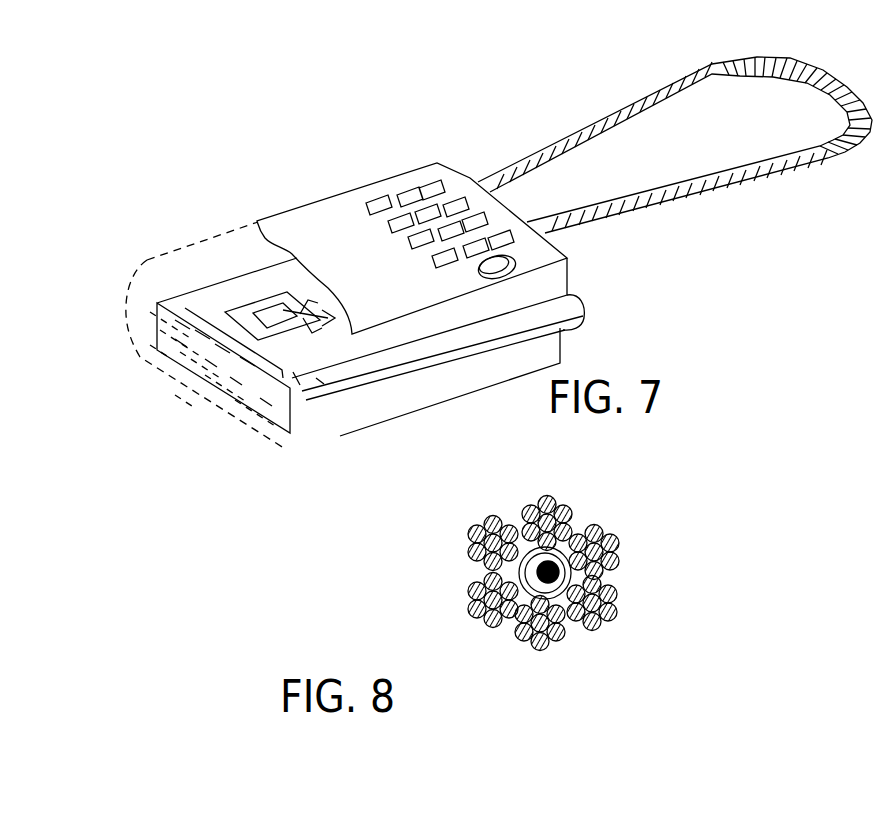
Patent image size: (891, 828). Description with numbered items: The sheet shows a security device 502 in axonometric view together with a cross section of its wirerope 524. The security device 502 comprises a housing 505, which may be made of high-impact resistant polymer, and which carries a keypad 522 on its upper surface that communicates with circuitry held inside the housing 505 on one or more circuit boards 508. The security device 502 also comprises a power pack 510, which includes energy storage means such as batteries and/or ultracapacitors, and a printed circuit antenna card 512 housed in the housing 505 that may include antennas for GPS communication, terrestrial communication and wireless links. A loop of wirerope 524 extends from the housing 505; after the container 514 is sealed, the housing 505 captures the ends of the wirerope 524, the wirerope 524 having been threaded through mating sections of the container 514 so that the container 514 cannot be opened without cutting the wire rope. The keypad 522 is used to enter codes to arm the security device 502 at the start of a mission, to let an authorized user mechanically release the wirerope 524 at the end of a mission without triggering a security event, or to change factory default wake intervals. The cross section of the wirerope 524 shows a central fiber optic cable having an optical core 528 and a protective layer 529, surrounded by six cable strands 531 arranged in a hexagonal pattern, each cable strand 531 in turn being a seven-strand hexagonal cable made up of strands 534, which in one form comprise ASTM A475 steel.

In FIG. 7, the security device 502 is at (362, 141).
In FIG. 7, the housing 505 is at (562, 272).
In FIG. 7, the circuit boards 508 is at (347, 430).
In FIG. 7, the power pack 510 is at (237, 386).
In FIG. 7, the printed circuit antenna card 512 is at (238, 317).
In FIG. 7, the container 514 is at (545, 352).
In FIG. 7, the keypad 522 is at (445, 190).
In FIG. 7, the wirerope 524 is at (710, 182).
In FIG. 8, the wirerope 524 is at (702, 532).
In FIG. 8, the optical core 528 is at (562, 572).
In FIG. 8, the protective layer 529 is at (568, 580).
In FIG. 8, the cable strands 531 is at (557, 497).
In FIG. 8, the strands 534 is at (572, 513).